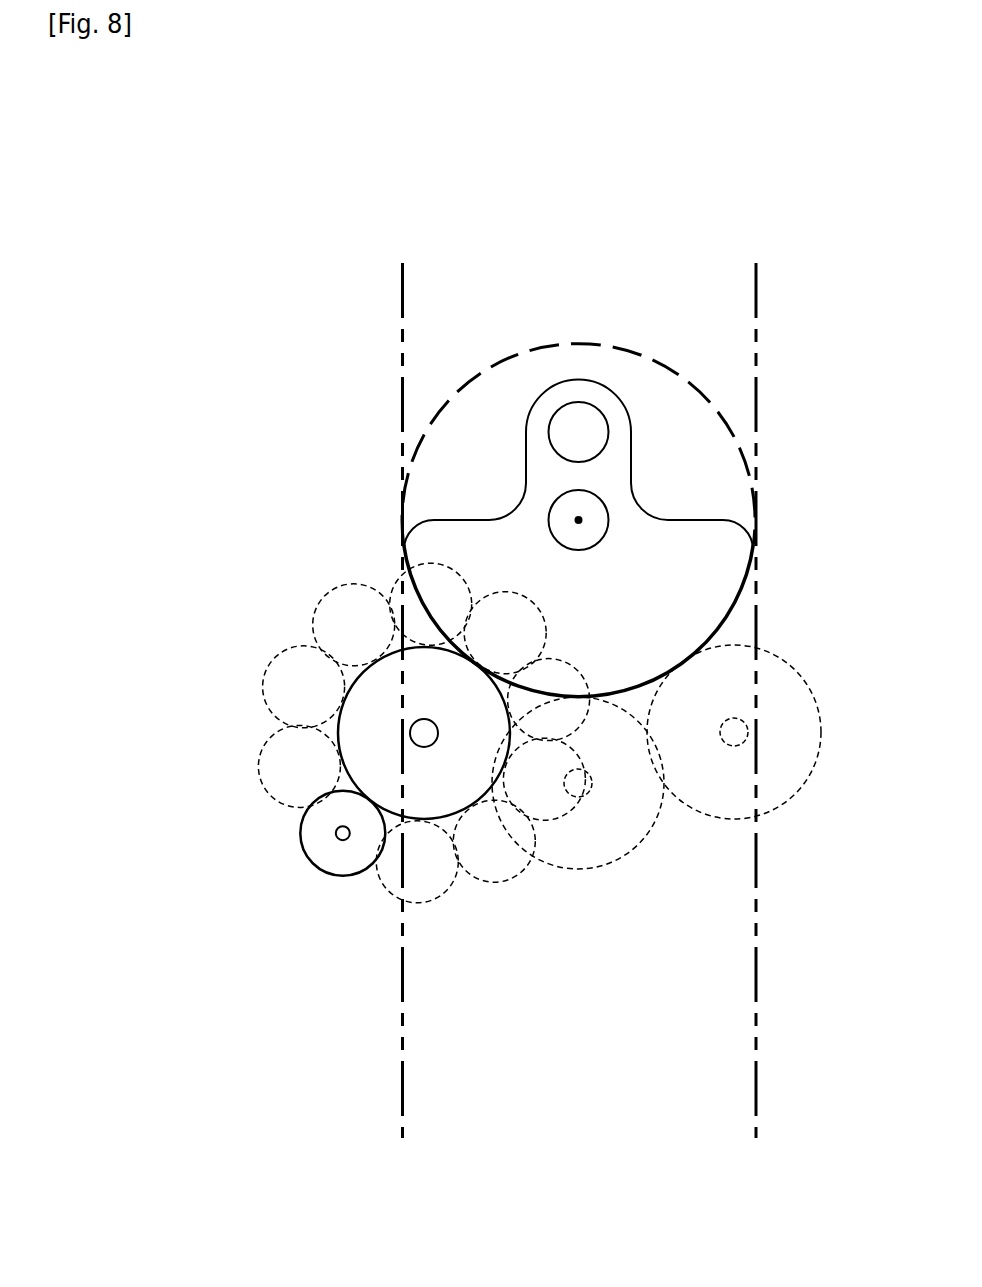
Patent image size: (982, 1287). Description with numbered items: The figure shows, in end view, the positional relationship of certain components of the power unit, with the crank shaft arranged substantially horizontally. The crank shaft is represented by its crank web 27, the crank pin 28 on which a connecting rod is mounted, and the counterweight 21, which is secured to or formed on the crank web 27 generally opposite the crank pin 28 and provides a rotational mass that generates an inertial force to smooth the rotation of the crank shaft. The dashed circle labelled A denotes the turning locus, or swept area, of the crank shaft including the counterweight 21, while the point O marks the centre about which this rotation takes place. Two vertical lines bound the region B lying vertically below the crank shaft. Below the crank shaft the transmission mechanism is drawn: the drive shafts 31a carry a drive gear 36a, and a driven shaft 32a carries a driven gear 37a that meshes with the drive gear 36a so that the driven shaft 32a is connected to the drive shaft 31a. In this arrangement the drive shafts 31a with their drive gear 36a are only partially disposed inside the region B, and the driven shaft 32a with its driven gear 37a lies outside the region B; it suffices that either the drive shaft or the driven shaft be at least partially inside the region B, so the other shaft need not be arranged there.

The counterweight 21 is at (741, 594).
The crank web 27 is at (632, 460).
The crank pin 28 is at (582, 415).
The center of rotation O is at (578, 522).
The turning locus of the crank shaft A is at (428, 423).
The region vertically below the crank shaft B is at (400, 1057).
The drive shaft 31a is at (425, 748).
The driven shaft 32a is at (343, 840).
The drive gear 36a is at (460, 823).
The driven gear 37a is at (302, 852).